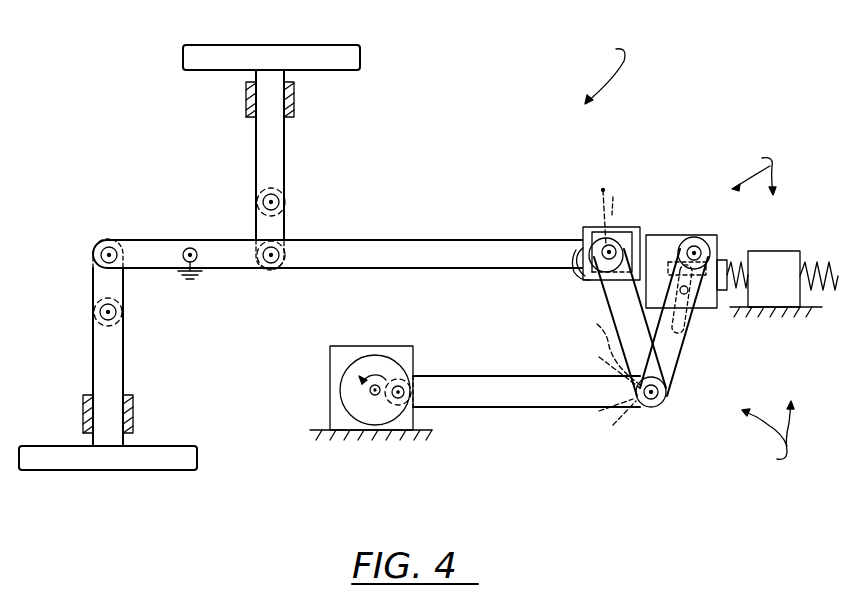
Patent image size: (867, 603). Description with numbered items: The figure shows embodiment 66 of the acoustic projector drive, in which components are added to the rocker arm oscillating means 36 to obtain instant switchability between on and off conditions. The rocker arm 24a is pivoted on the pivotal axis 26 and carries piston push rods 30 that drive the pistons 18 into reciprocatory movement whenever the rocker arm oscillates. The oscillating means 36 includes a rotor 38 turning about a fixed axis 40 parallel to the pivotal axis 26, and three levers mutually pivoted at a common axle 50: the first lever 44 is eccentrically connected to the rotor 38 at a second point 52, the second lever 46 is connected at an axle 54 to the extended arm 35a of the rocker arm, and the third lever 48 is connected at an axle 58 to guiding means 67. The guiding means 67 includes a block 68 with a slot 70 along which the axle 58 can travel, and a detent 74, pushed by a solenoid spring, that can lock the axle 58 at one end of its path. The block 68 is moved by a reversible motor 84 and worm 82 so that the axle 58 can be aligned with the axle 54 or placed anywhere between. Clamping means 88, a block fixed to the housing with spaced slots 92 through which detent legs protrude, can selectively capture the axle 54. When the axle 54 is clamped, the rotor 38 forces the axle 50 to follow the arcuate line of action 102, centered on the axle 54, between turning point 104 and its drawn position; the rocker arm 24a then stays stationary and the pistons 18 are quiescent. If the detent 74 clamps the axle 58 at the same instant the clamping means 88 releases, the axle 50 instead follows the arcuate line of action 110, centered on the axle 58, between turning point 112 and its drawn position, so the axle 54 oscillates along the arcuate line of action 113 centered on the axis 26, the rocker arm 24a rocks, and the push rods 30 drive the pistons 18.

The pistons 18 is at (307, 45).
The piston push rods 30 is at (96, 395).
The rocker arm 24a is at (428, 239).
The pivotal axis 26 is at (190, 248).
The rocker arm extended arm 35a is at (512, 216).
The clamping means 88 is at (580, 238).
The slots 92 is at (580, 266).
The arcuate line of action 113 is at (627, 218).
The axle 54 is at (614, 240).
The block 68 is at (671, 235).
The axle 58 is at (696, 248).
The detent 74 is at (726, 262).
The reversible motor 84 is at (796, 229).
The worm 82 is at (830, 242).
The slot 70 is at (691, 295).
The second lever 46 is at (640, 346).
The third lever 48 is at (676, 346).
The fixed axis 40 is at (372, 388).
The rotor 38 is at (354, 394).
The second point 52 is at (398, 386).
The first lever 44 is at (530, 402).
The axle 50 is at (662, 398).
The arcuate line of action 110 is at (600, 328).
The turning point 112 is at (599, 357).
The turning point 104 is at (599, 411).
The arcuate line of action 102 is at (614, 426).
The embodiment 66 is at (605, 69).
The guiding means 67 is at (754, 170).
The rocker arm oscillating means 36 is at (768, 435).